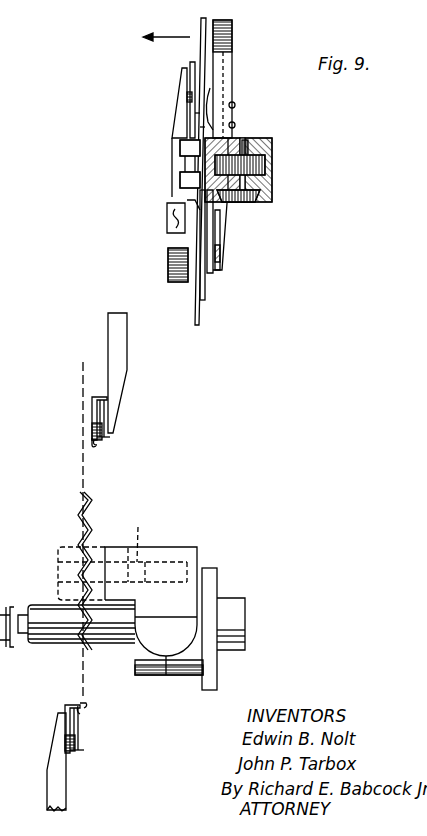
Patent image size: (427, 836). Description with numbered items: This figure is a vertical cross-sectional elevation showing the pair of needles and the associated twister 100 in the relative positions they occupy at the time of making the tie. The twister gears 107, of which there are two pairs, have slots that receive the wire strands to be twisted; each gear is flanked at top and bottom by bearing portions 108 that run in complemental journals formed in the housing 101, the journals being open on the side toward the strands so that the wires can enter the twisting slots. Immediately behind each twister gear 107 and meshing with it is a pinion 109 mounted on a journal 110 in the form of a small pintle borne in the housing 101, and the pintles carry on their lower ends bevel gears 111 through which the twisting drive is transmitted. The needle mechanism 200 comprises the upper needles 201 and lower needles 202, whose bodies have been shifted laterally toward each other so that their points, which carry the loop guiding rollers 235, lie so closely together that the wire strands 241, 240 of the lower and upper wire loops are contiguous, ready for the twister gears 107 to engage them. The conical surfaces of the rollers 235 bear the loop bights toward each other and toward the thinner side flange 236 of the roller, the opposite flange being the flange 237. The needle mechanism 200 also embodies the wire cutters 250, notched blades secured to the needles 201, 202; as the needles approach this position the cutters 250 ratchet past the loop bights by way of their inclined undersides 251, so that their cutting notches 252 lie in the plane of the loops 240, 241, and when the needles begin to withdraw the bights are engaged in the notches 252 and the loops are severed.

The housing 100 is at (243, 148).
The housing 101 is at (200, 562).
The twister gears 107 is at (190, 162).
The bearing portions 108 is at (187, 148).
The pinion 109 is at (273, 163).
The journal 110 is at (247, 138).
The bevel gears 111 is at (247, 203).
The needle mechanism 200 is at (156, 379).
The upper needles 201 is at (218, 66).
The lower needles 202 is at (60, 798).
The loop guiding rollers 235 is at (188, 77).
The side flange 236 is at (95, 443).
The link 237 is at (97, 443).
The wire strand of upper wire loop 240 is at (201, 22).
The wire strand of lower wire loop 241 is at (196, 302).
The wire cutters 250 is at (195, 113).
The inclined undersides 251 is at (200, 127).
The cutting notches 252 is at (210, 92).